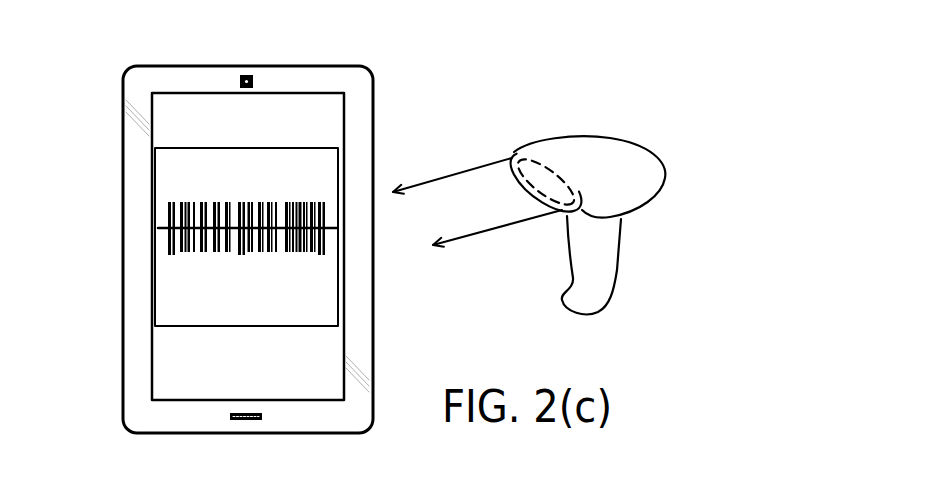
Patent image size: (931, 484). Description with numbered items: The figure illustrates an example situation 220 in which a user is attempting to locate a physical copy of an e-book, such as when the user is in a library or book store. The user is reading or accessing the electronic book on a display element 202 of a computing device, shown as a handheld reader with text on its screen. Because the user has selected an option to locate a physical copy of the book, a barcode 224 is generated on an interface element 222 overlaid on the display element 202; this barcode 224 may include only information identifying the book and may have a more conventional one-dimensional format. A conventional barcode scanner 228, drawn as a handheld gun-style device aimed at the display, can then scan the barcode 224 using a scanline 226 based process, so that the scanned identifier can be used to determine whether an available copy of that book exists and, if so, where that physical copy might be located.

The display element 202 is at (343, 122).
The example situation 220 is at (737, 97).
The interface element 222 is at (153, 247).
The barcode 224 is at (185, 278).
The scanline 226 is at (337, 228).
The barcode scanner 228 is at (622, 243).